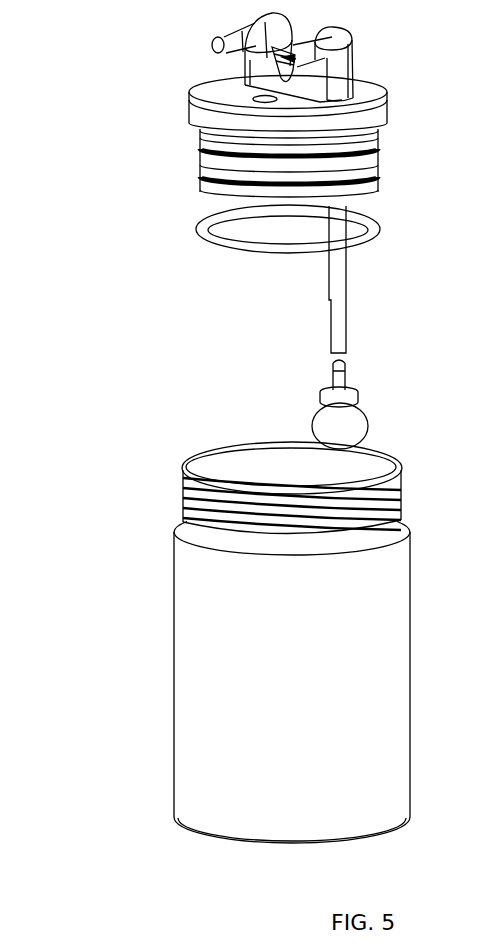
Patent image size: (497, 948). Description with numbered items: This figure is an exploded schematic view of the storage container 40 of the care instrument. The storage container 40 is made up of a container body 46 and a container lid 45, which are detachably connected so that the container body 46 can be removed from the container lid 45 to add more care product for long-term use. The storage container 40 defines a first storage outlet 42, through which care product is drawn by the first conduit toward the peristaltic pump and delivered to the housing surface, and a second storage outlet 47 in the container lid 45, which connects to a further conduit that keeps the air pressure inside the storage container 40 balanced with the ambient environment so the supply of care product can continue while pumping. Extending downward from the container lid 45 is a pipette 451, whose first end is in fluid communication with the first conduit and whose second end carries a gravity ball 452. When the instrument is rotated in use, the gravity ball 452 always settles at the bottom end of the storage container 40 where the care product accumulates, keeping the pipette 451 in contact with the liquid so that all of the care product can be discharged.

The storage container 40 is at (61, 38).
The first storage outlet 42 is at (341, 46).
The container lid 45 is at (360, 150).
The pipette 451 is at (345, 318).
The gravity ball 452 is at (349, 417).
The container body 46 is at (385, 697).
The second storage outlet 47 is at (212, 43).